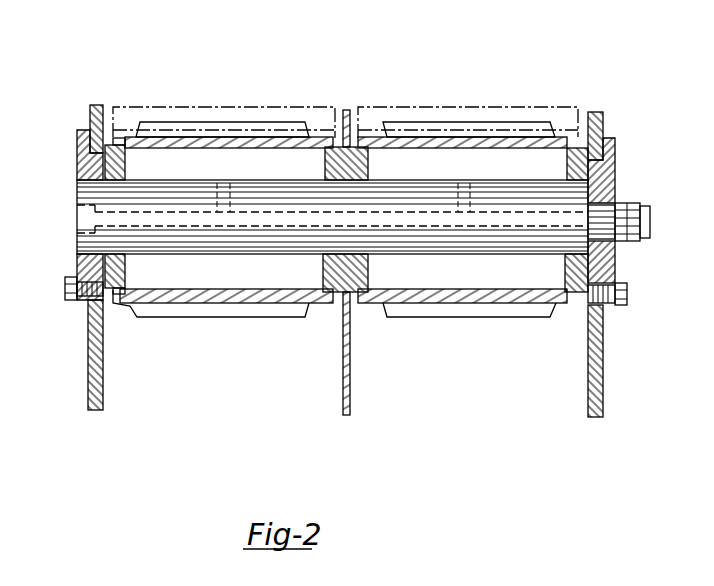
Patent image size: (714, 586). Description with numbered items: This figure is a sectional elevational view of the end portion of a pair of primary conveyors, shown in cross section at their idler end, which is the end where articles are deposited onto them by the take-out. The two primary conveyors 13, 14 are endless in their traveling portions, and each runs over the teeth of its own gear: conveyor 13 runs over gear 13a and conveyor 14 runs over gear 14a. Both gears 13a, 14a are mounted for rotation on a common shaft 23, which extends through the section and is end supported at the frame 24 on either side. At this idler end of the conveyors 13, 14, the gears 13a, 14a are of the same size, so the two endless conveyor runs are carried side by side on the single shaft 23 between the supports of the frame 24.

The primary conveyor 13 is at (481, 179).
The gear 13a is at (548, 128).
The primary conveyor 14 is at (231, 174).
The gear 14a is at (343, 88).
The shaft 23 is at (438, 233).
The frame 24 is at (87, 358).